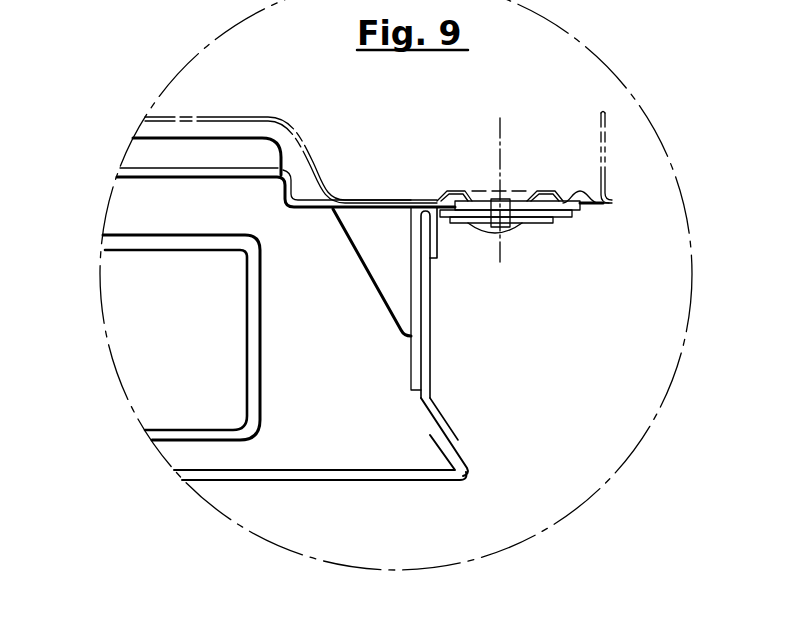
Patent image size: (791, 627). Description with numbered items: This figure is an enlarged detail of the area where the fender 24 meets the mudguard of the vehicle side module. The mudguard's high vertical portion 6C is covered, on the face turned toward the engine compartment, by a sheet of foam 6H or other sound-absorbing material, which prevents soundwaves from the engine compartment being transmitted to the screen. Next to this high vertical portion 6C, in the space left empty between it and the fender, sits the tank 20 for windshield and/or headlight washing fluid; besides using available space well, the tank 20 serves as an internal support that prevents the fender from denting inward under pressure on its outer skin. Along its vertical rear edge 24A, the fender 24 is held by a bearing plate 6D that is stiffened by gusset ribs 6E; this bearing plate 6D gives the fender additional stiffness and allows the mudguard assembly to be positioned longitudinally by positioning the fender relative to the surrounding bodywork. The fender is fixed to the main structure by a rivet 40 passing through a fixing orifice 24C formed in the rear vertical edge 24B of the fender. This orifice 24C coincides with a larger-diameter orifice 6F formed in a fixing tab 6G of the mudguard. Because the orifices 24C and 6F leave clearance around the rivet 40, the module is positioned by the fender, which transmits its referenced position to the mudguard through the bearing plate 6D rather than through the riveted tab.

The tank 20 is at (173, 357).
The high vertical portion of the mudguard 6C is at (217, 174).
The sheet of foam 6H is at (285, 158).
The gusset ribs 6E is at (380, 237).
The larger-diameter orifice 6F is at (462, 200).
The rivet 40 is at (507, 210).
The fixing tab of the mudguard 6G is at (600, 200).
The rear vertical edge of the fender 24B is at (563, 220).
The fixing orifice 24C is at (527, 226).
The vertical rear edge of the fender 24A is at (430, 302).
The bearing plate 6D is at (417, 362).
The fender 24 is at (338, 477).